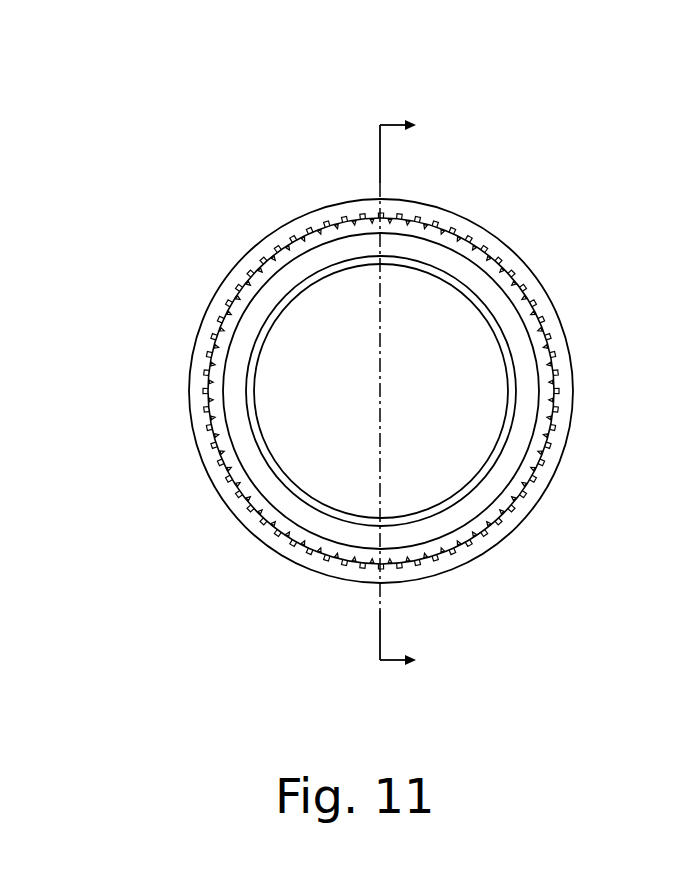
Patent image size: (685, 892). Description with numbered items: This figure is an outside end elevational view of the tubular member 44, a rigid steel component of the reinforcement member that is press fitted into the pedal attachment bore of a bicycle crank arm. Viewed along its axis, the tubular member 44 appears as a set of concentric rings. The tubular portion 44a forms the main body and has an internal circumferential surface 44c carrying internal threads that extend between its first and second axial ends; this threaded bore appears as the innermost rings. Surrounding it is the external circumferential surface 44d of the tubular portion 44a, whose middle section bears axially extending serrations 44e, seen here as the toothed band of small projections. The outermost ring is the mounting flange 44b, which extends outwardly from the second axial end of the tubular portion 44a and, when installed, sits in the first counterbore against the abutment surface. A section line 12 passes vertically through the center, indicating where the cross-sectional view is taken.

The tubular member 44 is at (228, 172).
The tubular portion 44a is at (528, 397).
The mounting flange 44b is at (248, 493).
The internal circumferential surface 44c is at (457, 495).
The external circumferential surface 44d is at (230, 284).
The axially extending serrations 44e is at (484, 250).
The section line 12- 12 is at (417, 390).